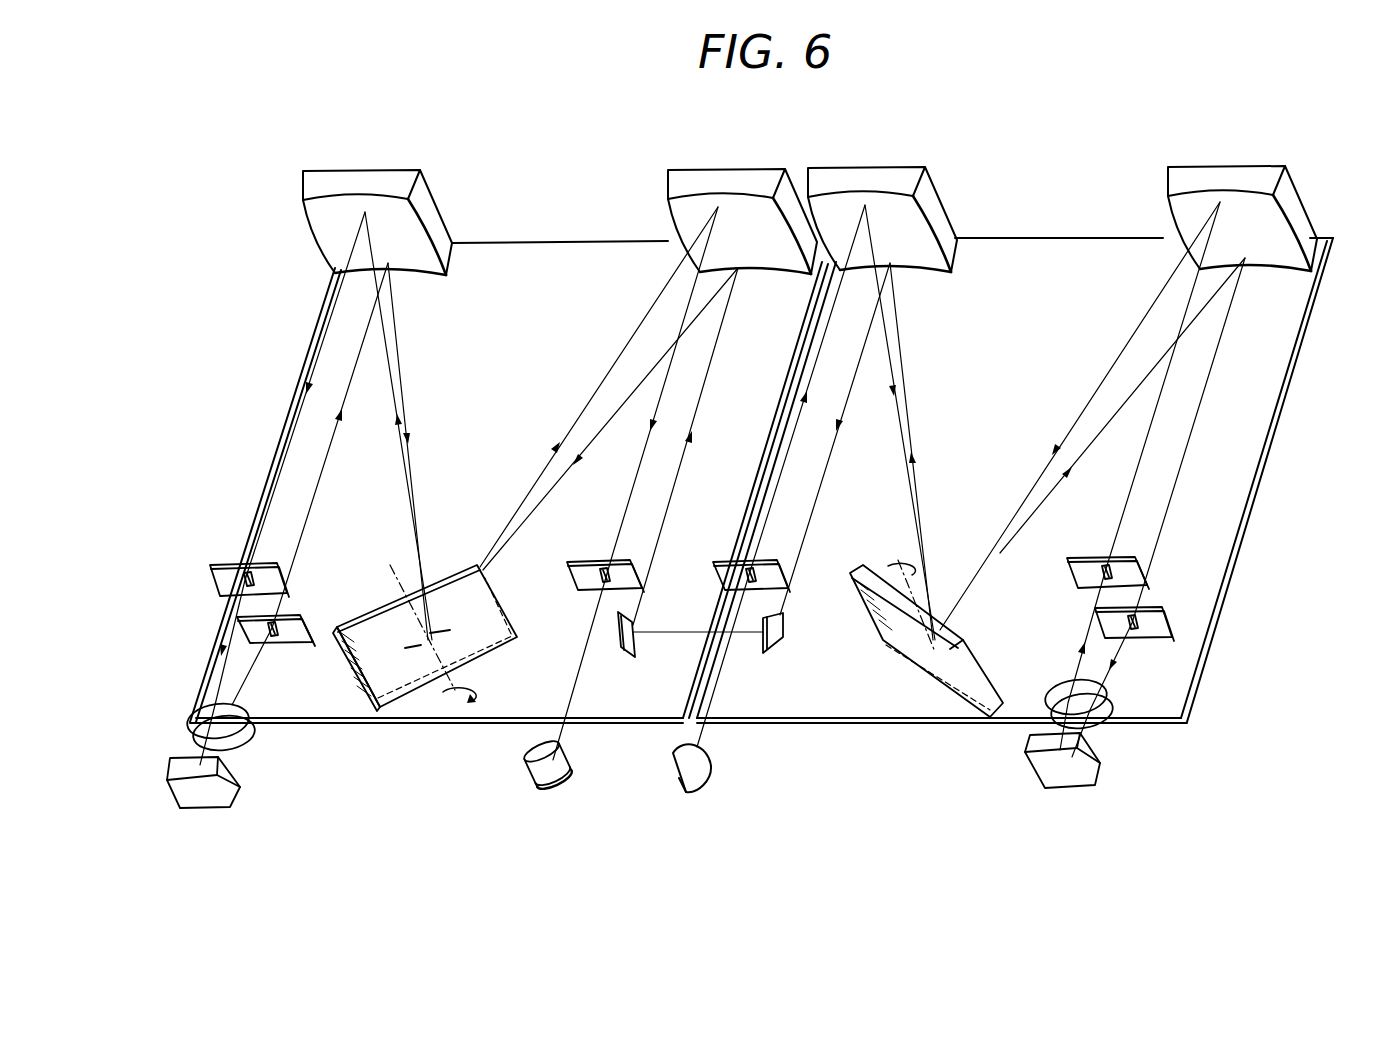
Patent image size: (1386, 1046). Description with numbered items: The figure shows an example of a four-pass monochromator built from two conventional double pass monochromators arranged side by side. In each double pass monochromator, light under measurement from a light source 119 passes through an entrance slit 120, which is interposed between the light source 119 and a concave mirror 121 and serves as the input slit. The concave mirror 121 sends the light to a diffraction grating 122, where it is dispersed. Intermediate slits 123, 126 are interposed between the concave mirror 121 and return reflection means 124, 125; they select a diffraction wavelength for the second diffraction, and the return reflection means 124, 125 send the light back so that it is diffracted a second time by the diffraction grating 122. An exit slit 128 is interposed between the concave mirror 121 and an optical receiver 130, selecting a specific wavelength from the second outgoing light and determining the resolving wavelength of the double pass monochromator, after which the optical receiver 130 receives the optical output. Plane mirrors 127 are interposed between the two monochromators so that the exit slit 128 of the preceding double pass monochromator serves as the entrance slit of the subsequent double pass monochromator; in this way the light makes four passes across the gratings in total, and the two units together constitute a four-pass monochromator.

The light source 119 is at (682, 793).
The entrance slit 120 is at (722, 570).
The concave mirror 121 is at (367, 180).
The diffraction grating 122 is at (400, 680).
The intermediate slit 123 is at (297, 640).
The return reflection means 124 is at (248, 745).
The return reflection means 125 is at (202, 805).
The intermediate slit 126 is at (222, 580).
The plane mirror 127 is at (620, 653).
The exit slit 128 is at (583, 570).
The optical receiver 130 is at (542, 783).